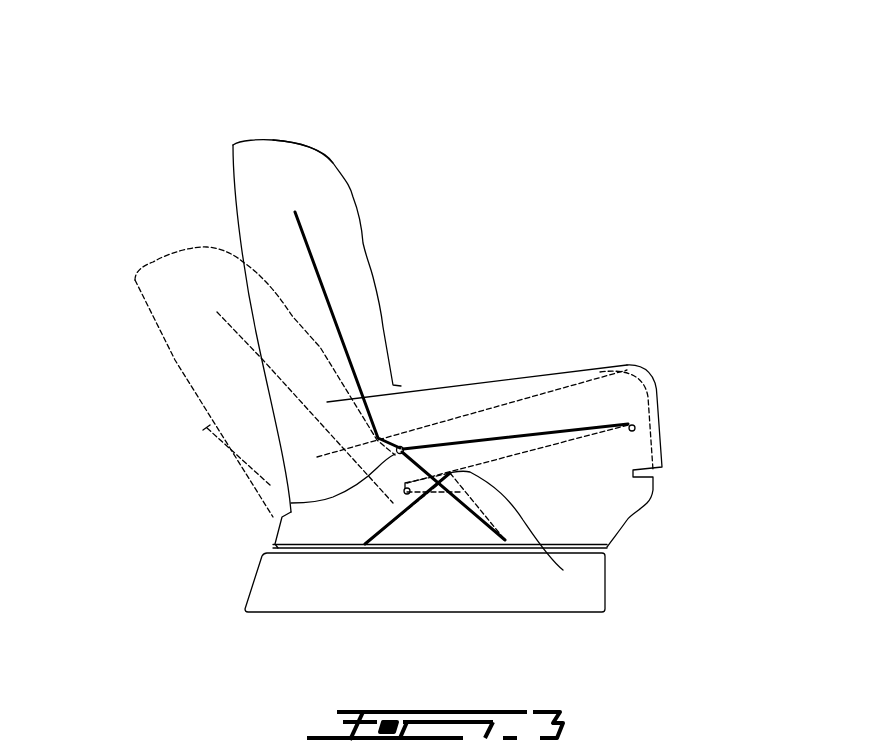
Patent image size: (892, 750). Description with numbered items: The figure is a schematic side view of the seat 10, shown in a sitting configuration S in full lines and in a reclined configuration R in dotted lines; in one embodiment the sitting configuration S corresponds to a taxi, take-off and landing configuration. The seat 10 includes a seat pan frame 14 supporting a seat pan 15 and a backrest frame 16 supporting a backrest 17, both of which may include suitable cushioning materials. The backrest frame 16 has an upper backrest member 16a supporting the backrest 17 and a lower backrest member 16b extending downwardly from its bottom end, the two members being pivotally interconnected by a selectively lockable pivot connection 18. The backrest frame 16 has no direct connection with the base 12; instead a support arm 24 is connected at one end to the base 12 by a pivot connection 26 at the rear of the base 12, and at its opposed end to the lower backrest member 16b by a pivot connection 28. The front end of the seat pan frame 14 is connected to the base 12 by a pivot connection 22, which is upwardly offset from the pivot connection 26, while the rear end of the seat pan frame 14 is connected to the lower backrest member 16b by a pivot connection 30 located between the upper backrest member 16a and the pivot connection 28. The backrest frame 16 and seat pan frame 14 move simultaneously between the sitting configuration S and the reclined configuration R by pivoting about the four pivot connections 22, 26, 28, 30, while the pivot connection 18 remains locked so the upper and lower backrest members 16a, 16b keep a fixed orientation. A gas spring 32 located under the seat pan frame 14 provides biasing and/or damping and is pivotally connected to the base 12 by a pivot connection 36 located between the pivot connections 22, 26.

The seat 10 is at (503, 160).
The base 12 is at (296, 547).
The seat pan frame 14 is at (555, 427).
The seat pan 15 is at (615, 383).
The backrest frame 16 is at (318, 234).
The upper backrest member 16a is at (328, 298).
The lower backrest member 16b is at (423, 447).
The backrest 17 is at (312, 180).
The pivot connection 18 is at (287, 502).
The pivot connection 22 is at (636, 430).
The support arm 24 is at (395, 502).
The pivot connection 26 is at (365, 545).
The pivot connection 28 is at (563, 570).
The pivot connection 30 is at (404, 446).
The gas spring 32 is at (465, 492).
The pivot connection 36 is at (503, 545).
The sitting configuration S is at (268, 126).
The reclined configuration R is at (152, 238).